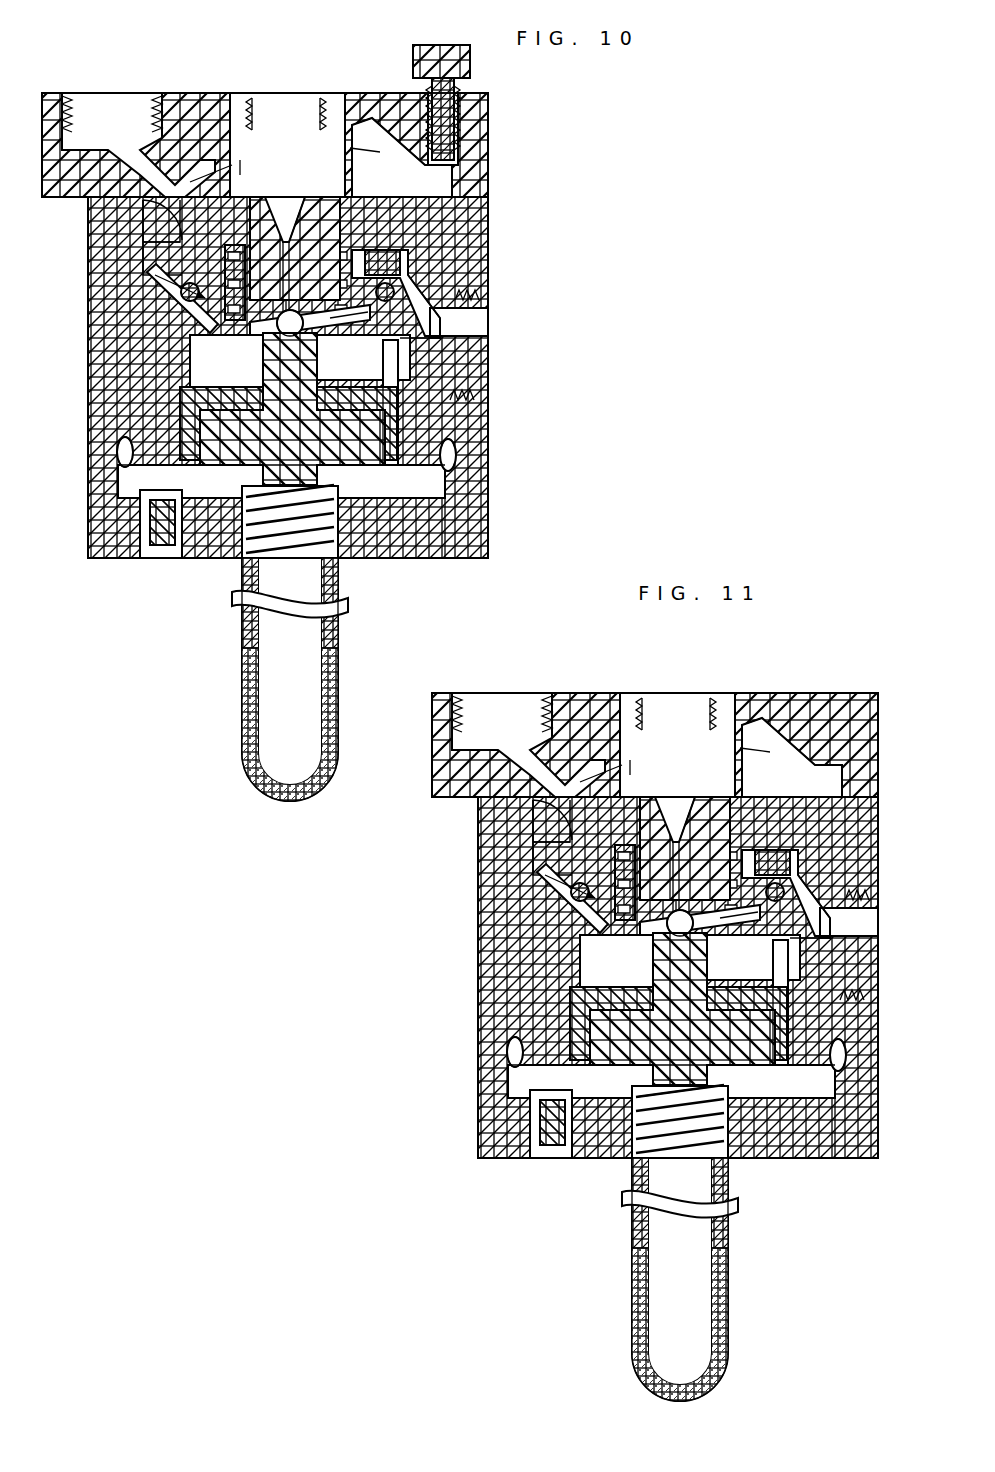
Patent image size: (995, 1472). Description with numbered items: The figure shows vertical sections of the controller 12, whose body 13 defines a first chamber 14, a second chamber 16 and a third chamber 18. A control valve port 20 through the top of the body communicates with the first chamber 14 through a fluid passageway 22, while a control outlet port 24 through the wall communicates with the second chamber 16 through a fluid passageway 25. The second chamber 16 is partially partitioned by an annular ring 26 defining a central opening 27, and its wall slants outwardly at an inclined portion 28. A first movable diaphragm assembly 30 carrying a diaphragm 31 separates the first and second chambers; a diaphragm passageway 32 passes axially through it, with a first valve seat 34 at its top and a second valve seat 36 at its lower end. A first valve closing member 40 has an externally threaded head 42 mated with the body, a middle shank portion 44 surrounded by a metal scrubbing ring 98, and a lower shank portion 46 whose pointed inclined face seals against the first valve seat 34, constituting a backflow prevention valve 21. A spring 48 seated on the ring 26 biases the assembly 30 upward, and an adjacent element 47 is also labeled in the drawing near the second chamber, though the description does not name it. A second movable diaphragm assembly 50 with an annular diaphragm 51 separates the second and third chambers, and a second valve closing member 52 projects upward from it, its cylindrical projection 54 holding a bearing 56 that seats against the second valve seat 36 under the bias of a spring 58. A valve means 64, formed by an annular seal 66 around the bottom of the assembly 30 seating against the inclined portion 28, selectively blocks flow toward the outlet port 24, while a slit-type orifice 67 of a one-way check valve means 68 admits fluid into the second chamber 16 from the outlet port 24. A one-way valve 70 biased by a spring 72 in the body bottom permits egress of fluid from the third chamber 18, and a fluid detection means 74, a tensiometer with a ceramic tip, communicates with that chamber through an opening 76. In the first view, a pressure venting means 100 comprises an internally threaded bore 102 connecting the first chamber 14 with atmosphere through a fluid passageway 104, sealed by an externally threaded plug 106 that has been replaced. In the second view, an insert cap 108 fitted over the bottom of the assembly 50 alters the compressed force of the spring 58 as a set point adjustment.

In FIG. 10, the controller valve 12 is at (386, 78).
In FIG. 11, the controller valve 12 is at (784, 651).
In FIG. 10, the body 13 is at (380, 100).
In FIG. 11, the body 13 is at (793, 707).
In FIG. 10, the first chamber 14 is at (440, 182).
In FIG. 11, the first chamber 14 is at (672, 745).
In FIG. 10, the second chamber 16 is at (185, 355).
In FIG. 11, the second chamber 16 is at (654, 977).
In FIG. 10, the third chamber 18 is at (450, 495).
In FIG. 11, the third chamber 18 is at (873, 1118).
In FIG. 10, the control valve port 20 is at (63, 98).
In FIG. 11, the control valve port 20 is at (455, 699).
In FIG. 10, the backflow prevention valve 21 is at (290, 190).
In FIG. 11, the backflow prevention valve 21 is at (667, 774).
In FIG. 10, the fluid passageway 22 is at (118, 135).
In FIG. 11, the fluid passageway 22 is at (489, 707).
In FIG. 10, the control outlet port 24 is at (452, 310).
In FIG. 11, the control outlet port 24 is at (875, 919).
In FIG. 10, the fluid passageway 25 is at (446, 340).
In FIG. 11, the fluid passageway 25 is at (872, 939).
In FIG. 10, the annular ring 26 is at (412, 348).
In FIG. 11, the annular ring 26 is at (856, 967).
In FIG. 10, the central opening 27 is at (240, 340).
In FIG. 11, the central opening 27 is at (745, 905).
In FIG. 10, the inclined portion 28 is at (418, 350).
In FIG. 11, the inclined portion 28 is at (856, 954).
In FIG. 10, the first movable diaphragm assembly 30 is at (176, 230).
In FIG. 11, the first movable diaphragm assembly 30 is at (503, 846).
In FIG. 10, the diaphragm 31 is at (140, 212).
In FIG. 11, the diaphragm 31 is at (484, 837).
In FIG. 10, the diaphragm passageway 32 is at (348, 200).
In FIG. 11, the diaphragm passageway 32 is at (754, 762).
In FIG. 10, the first valve seat 34 is at (222, 254).
In FIG. 11, the first valve seat 34 is at (536, 861).
In FIG. 10, the second valve seat 36 is at (232, 280).
In FIG. 11, the second valve seat 36 is at (527, 882).
In FIG. 10, the first valve closing member 40 is at (316, 90).
In FIG. 11, the first valve closing member 40 is at (686, 663).
In FIG. 10, the externally threaded head 42 is at (250, 120).
In FIG. 11, the externally threaded head 42 is at (640, 689).
In FIG. 10, the middle shank portion 44 is at (335, 128).
In FIG. 11, the middle shank portion 44 is at (736, 724).
In FIG. 10, the lower shank portion 46 is at (245, 172).
In FIG. 11, the lower shank portion 46 is at (612, 774).
In FIG. 10, the seal 47 is at (398, 260).
In FIG. 11, the seal 47 is at (834, 866).
In FIG. 10, the spring 48 is at (392, 276).
In FIG. 11, the spring 48 is at (845, 872).
In FIG. 10, the second movable diaphragm assembly 50 is at (440, 480).
In FIG. 11, the second movable diaphragm assembly 50 is at (671, 1082).
In FIG. 10, the annular diaphragm 51 is at (140, 465).
In FIG. 11, the annular diaphragm 51 is at (558, 1066).
In FIG. 10, the second valve closing member 52 is at (332, 375).
In FIG. 11, the second valve closing member 52 is at (685, 1009).
In FIG. 10, the cylindrical projection 54 is at (266, 355).
In FIG. 11, the cylindrical projection 54 is at (623, 960).
In FIG. 10, the bearing 56 is at (302, 332).
In FIG. 11, the bearing 56 is at (703, 937).
In FIG. 10, the spring 58 is at (286, 552).
In FIG. 11, the spring 58 is at (680, 1137).
In FIG. 10, the valve means 64 is at (180, 295).
In FIG. 11, the valve means 64 is at (513, 904).
In FIG. 10, the annular seal 66 is at (432, 300).
In FIG. 11, the annular seal 66 is at (857, 896).
In FIG. 10, the slit-type orifice 67 is at (452, 440).
In FIG. 11, the slit-type orifice 67 is at (871, 1049).
In FIG. 10, the one-way check valve means 68 is at (400, 380).
In FIG. 11, the one-way check valve means 68 is at (848, 1022).
In FIG. 10, the one-way valve 70 is at (142, 512).
In FIG. 11, the one-way valve 70 is at (480, 1124).
In FIG. 10, the spring 72 is at (160, 558).
In FIG. 11, the spring 72 is at (550, 1152).
In FIG. 10, the fluid detection means 74 is at (238, 688).
In FIG. 11, the fluid detection means 74 is at (639, 1279).
In FIG. 10, the opening 76 is at (238, 558).
In FIG. 11, the opening 76 is at (612, 1141).
In FIG. 10, the scrubbing ring 98 is at (246, 168).
In FIG. 11, the scrubbing ring 98 is at (619, 754).
In FIG. 10, the pressure venting means 100 is at (478, 72).
In FIG. 10, the internally threaded bore 102 is at (460, 108).
In FIG. 10, the fluid passageway 104 is at (455, 162).
In FIG. 10, the externally threaded plug 106 is at (436, 45).
In FIG. 11, the insert cap 108 is at (761, 1137).